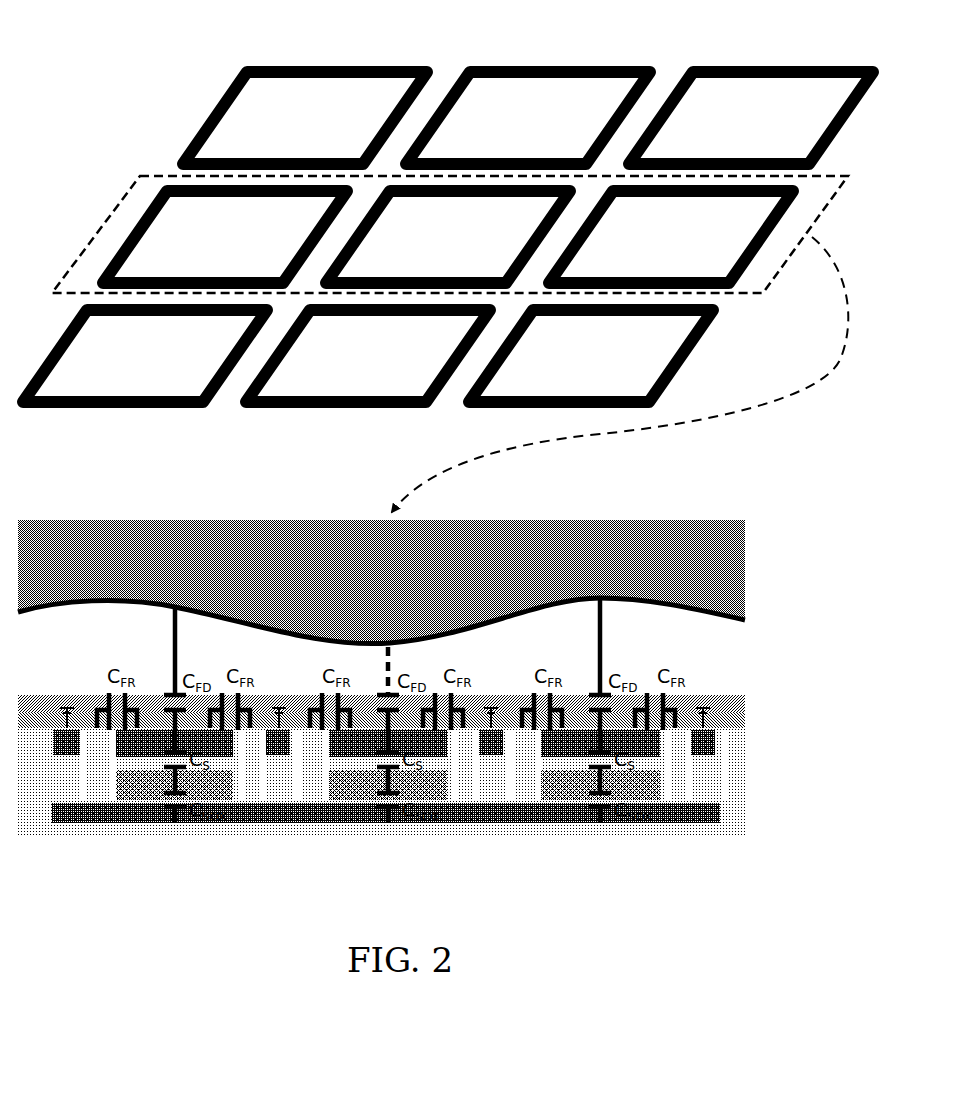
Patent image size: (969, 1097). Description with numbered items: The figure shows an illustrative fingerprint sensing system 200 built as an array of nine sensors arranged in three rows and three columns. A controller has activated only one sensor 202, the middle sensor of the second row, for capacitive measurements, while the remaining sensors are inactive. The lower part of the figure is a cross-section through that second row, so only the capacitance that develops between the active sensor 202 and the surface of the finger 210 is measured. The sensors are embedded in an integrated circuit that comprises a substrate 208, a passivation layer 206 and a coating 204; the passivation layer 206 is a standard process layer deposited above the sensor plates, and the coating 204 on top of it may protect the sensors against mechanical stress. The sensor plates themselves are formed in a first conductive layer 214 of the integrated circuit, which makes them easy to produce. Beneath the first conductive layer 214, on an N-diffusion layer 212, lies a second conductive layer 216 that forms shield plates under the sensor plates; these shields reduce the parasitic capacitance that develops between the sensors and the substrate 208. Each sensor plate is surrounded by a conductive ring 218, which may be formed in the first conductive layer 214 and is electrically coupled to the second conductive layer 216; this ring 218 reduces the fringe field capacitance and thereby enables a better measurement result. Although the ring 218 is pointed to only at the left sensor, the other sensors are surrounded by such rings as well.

The fingerprint sensing system 200 is at (138, 86).
The sensor 202 is at (448, 237).
The coating 204 is at (745, 700).
The passivation layer 206 is at (745, 718).
The substrate 208 is at (745, 775).
The finger 210 is at (745, 565).
The N-diffusion layer 212 is at (677, 817).
The first conductive layer 214 is at (127, 848).
The second conductive layer 216 is at (570, 785).
The conductive ring 218 is at (92, 745).